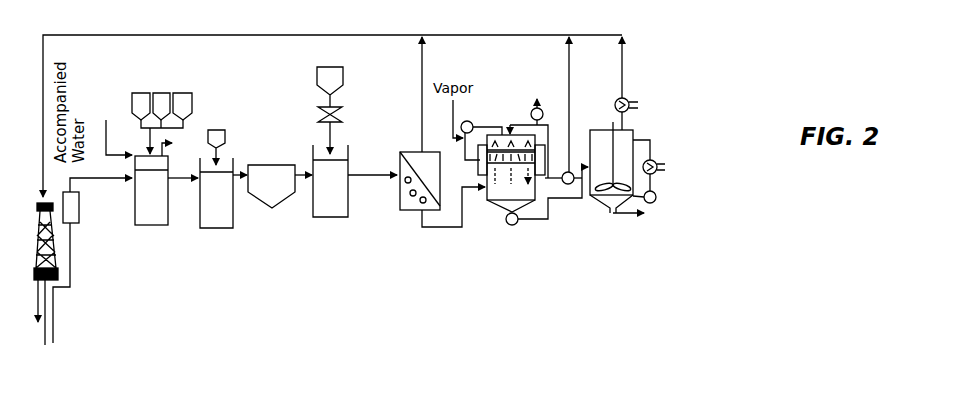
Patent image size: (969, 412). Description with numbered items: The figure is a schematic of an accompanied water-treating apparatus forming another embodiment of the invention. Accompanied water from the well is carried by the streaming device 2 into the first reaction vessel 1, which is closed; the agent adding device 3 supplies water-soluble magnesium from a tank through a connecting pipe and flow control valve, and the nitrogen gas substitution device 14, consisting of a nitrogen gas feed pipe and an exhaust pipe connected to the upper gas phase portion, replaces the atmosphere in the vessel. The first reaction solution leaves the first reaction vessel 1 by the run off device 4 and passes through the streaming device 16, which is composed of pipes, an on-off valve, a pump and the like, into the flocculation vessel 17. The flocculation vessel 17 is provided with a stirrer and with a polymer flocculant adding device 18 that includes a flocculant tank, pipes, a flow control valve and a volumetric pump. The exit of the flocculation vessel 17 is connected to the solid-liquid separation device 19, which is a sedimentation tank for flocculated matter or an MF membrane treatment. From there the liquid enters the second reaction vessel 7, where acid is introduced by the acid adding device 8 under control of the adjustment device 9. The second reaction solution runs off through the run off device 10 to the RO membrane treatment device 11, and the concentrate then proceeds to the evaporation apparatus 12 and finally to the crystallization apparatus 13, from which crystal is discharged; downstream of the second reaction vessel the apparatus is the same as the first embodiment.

The first reaction vessel 1 is at (170, 158).
The streaming device 2 is at (79, 207).
The agent adding device 3 is at (185, 93).
The run off device 4 is at (171, 180).
The second reaction vessel 7 is at (350, 155).
The acid adding device 8 is at (333, 67).
The adjustment device 9 is at (341, 114).
The run off device 10 is at (371, 178).
The RO membrane treatment device 11 is at (425, 151).
The evaporation apparatus 12 is at (503, 134).
The crystallization apparatus 13 is at (628, 128).
The nitrogen gas substitution device 14 is at (114, 128).
The streaming device 16 is at (186, 178).
The flocculation vessel 17 is at (233, 213).
The polymer flocculant adding device 18 is at (218, 130).
The solid-liquid separation device 19 is at (276, 163).